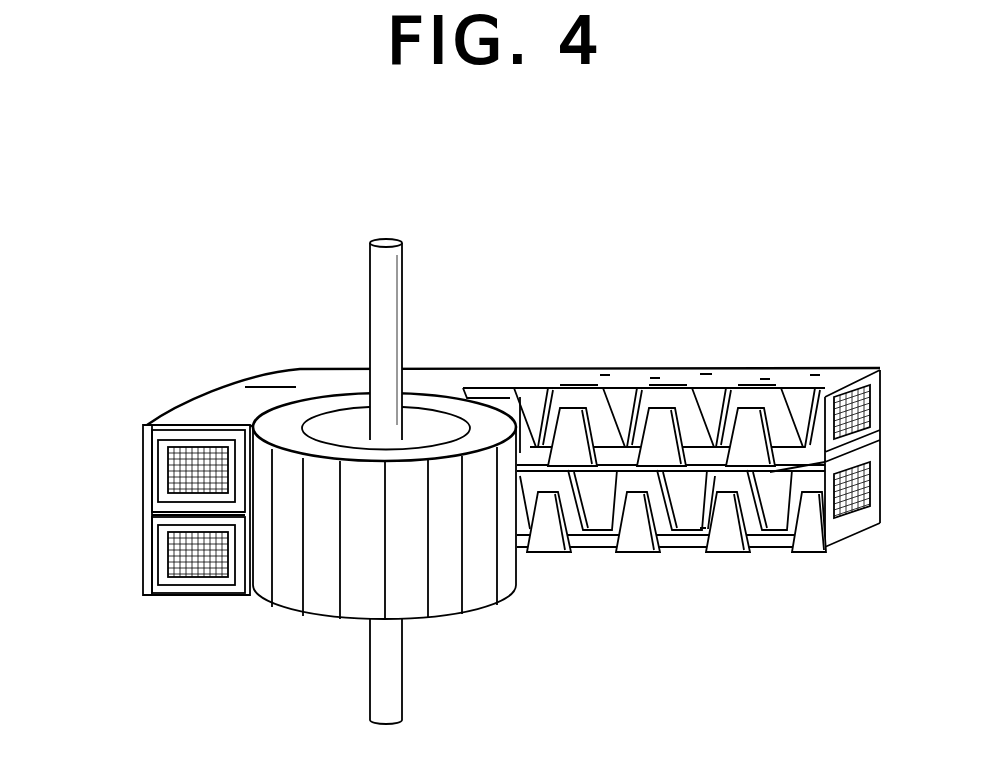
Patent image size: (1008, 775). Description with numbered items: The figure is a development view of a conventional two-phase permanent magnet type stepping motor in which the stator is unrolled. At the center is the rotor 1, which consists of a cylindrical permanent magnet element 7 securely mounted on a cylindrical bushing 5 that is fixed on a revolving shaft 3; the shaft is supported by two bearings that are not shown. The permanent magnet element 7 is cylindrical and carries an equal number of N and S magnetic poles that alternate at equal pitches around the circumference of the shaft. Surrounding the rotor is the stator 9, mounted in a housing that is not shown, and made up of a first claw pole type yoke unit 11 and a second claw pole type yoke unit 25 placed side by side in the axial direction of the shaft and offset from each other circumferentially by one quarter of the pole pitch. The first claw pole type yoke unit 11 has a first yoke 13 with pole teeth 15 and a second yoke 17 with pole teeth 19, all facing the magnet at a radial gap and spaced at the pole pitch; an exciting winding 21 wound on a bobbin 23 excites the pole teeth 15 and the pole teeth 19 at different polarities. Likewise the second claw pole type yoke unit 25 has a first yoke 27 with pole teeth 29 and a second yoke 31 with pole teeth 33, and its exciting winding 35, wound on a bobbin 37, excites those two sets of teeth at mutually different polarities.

The rotor 1 is at (316, 623).
The revolving shaft 3 is at (393, 287).
The cylindrical bushing 5 is at (423, 417).
The cylindrical permanent magnet element 7 is at (478, 603).
The stator 9 is at (605, 360).
The first claw pole type yoke unit 11 is at (820, 360).
The first yoke 13 is at (713, 370).
The pole teeth 15 is at (700, 407).
The second yoke 17 is at (817, 460).
The pole teeth 19 is at (660, 445).
The exciting winding 21 is at (170, 473).
The bobbin 23 is at (190, 440).
The second claw pole type yoke unit 25 is at (784, 556).
The first yoke 27 is at (820, 552).
The pole teeth 29 is at (602, 493).
The second yoke 31 is at (677, 508).
The pole teeth 33 is at (540, 537).
The exciting winding 35 is at (170, 550).
The bobbin 37 is at (170, 588).